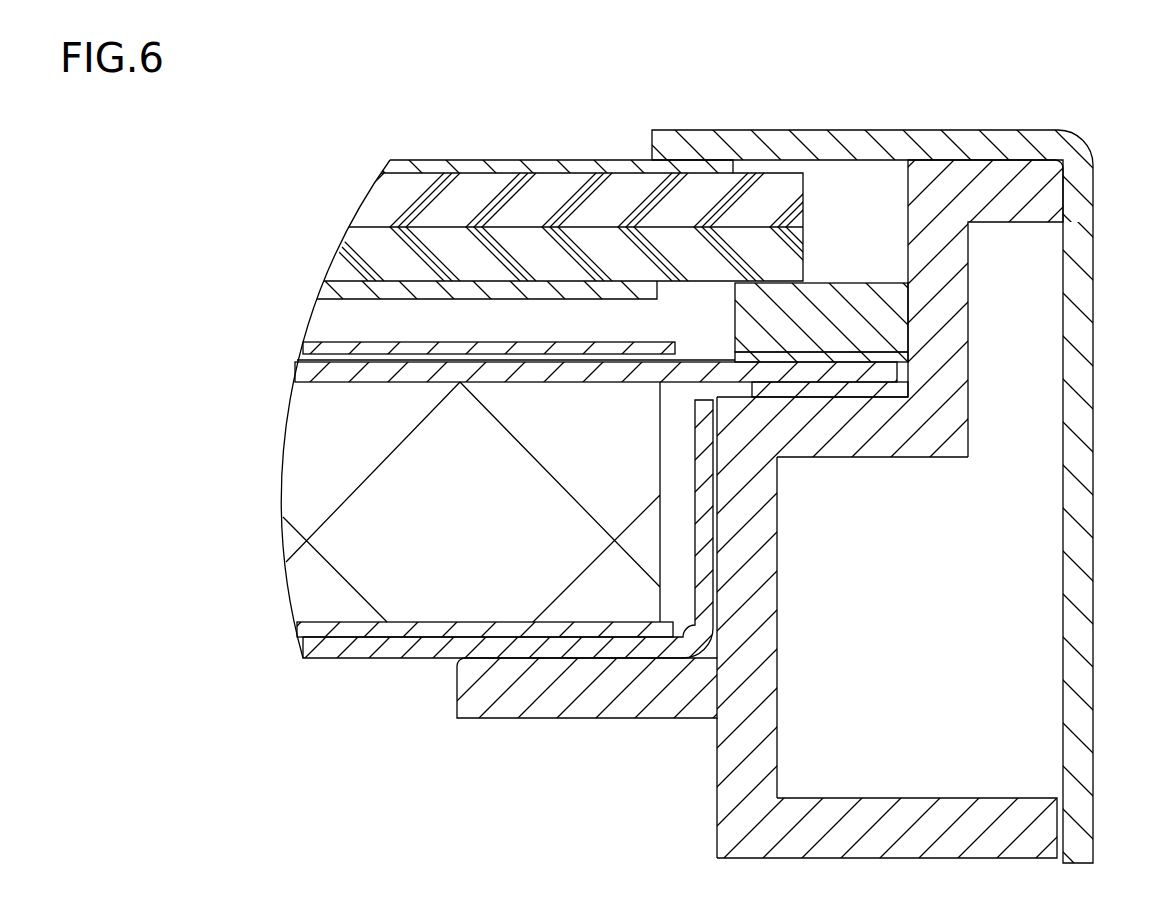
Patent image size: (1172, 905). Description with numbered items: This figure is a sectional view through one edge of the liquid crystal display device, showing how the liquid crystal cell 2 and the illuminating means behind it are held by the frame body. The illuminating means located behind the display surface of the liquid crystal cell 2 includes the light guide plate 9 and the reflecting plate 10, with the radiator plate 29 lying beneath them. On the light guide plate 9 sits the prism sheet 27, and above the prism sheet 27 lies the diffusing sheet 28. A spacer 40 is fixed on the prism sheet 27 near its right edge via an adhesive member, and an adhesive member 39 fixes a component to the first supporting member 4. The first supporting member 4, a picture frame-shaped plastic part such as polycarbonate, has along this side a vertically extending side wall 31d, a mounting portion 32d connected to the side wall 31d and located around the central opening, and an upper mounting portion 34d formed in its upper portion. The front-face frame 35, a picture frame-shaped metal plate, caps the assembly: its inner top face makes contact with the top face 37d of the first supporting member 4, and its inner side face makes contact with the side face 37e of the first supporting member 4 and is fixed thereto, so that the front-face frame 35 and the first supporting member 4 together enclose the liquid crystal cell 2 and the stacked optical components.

The liquid crystal cell 2 is at (497, 175).
The first supporting member 4 is at (717, 770).
The light guide plate 9 is at (308, 444).
The reflecting plate 10 is at (325, 625).
The prism sheet 27 is at (912, 360).
The diffusing sheet 28 is at (330, 343).
The radiator plate 29 is at (370, 655).
The side wall 31d is at (768, 595).
The mounting portion 32d is at (510, 705).
The upper mounting portion 34d is at (837, 398).
The front-face frame 35 is at (870, 134).
The top face 37d is at (1003, 162).
The side face 37e is at (1057, 812).
The adhesive member 39 is at (885, 374).
The spacer 40 is at (850, 300).